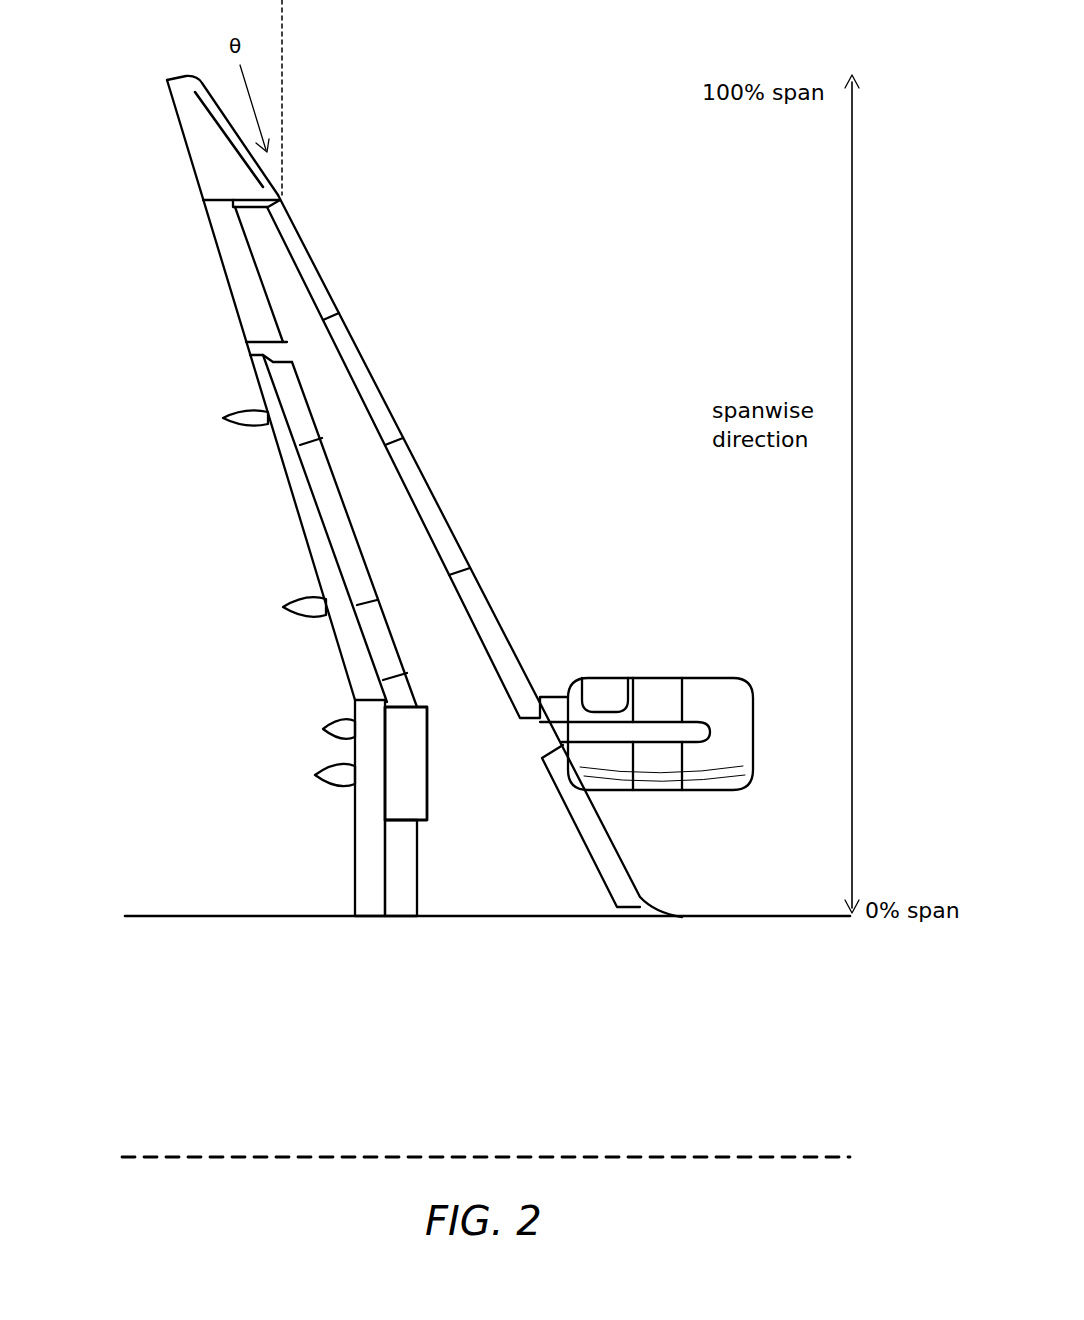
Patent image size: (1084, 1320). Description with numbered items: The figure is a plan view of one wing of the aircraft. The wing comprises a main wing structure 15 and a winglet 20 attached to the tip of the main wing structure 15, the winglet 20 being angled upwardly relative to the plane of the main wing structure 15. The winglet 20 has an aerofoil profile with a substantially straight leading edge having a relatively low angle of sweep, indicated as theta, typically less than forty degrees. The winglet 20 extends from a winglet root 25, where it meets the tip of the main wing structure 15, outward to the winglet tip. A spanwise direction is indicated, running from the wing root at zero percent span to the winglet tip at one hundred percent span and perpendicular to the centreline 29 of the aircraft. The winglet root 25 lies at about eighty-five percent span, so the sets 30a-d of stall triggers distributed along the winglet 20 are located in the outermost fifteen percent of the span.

The main wing structure 15 is at (403, 548).
The winglet 20 is at (312, 110).
The winglet root 25 is at (235, 203).
The centreline 29 is at (210, 1155).
The sets of stall triggers 30a-d is at (222, 133).